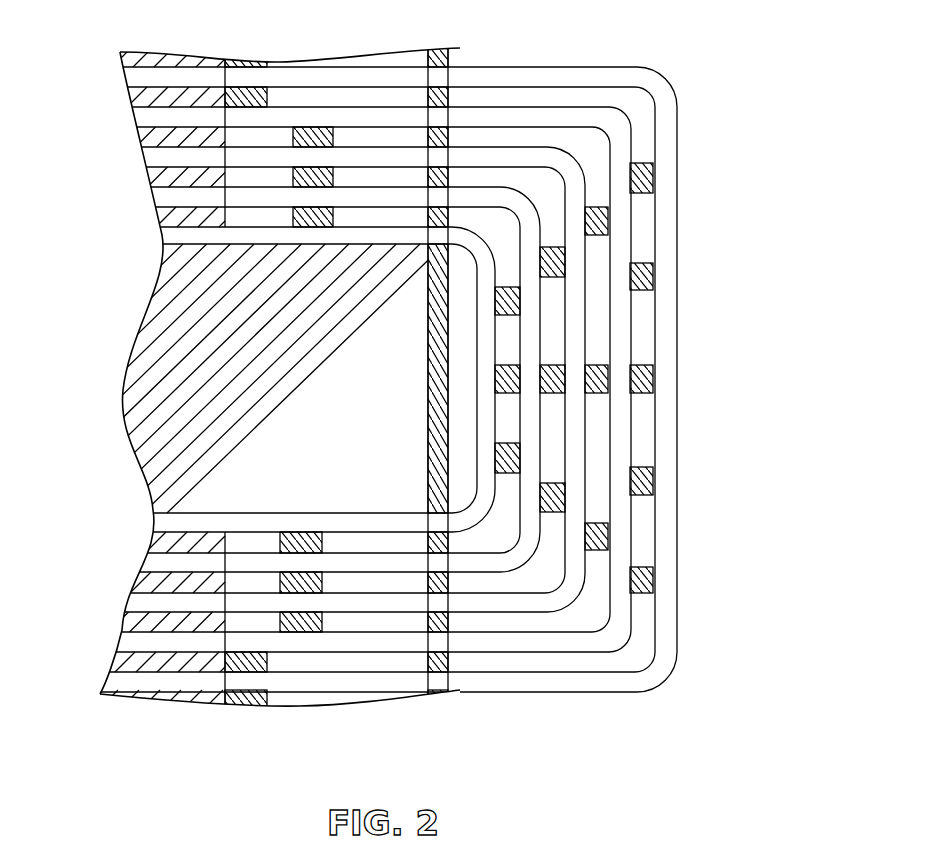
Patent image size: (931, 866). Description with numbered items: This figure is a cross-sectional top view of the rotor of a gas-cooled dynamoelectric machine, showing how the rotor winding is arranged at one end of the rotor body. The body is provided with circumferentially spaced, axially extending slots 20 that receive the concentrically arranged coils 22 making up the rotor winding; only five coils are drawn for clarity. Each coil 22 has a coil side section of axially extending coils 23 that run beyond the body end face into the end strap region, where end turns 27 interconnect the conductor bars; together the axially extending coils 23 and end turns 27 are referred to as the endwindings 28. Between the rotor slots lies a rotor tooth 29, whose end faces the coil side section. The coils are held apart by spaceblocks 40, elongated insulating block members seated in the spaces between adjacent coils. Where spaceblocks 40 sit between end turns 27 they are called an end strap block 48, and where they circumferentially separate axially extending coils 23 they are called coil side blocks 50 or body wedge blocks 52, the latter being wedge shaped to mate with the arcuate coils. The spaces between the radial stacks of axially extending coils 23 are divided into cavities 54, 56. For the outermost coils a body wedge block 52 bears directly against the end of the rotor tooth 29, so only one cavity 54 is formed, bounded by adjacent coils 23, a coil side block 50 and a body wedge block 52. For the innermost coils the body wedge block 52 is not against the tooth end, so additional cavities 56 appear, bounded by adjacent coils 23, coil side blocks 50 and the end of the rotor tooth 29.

The slots 20 is at (177, 209).
The coils 22 is at (165, 197).
The axially extending coils 23 is at (267, 197).
The end turns 27 is at (668, 650).
The endwindings 28 is at (700, 75).
The rotor tooth 29 is at (163, 543).
The spaceblocks 40 is at (512, 397).
The end strap block 48 is at (607, 535).
The coil side blocks 50 is at (448, 582).
The body wedge blocks 52 is at (315, 582).
The cavities 54 is at (367, 575).
The cavities 56 is at (242, 578).